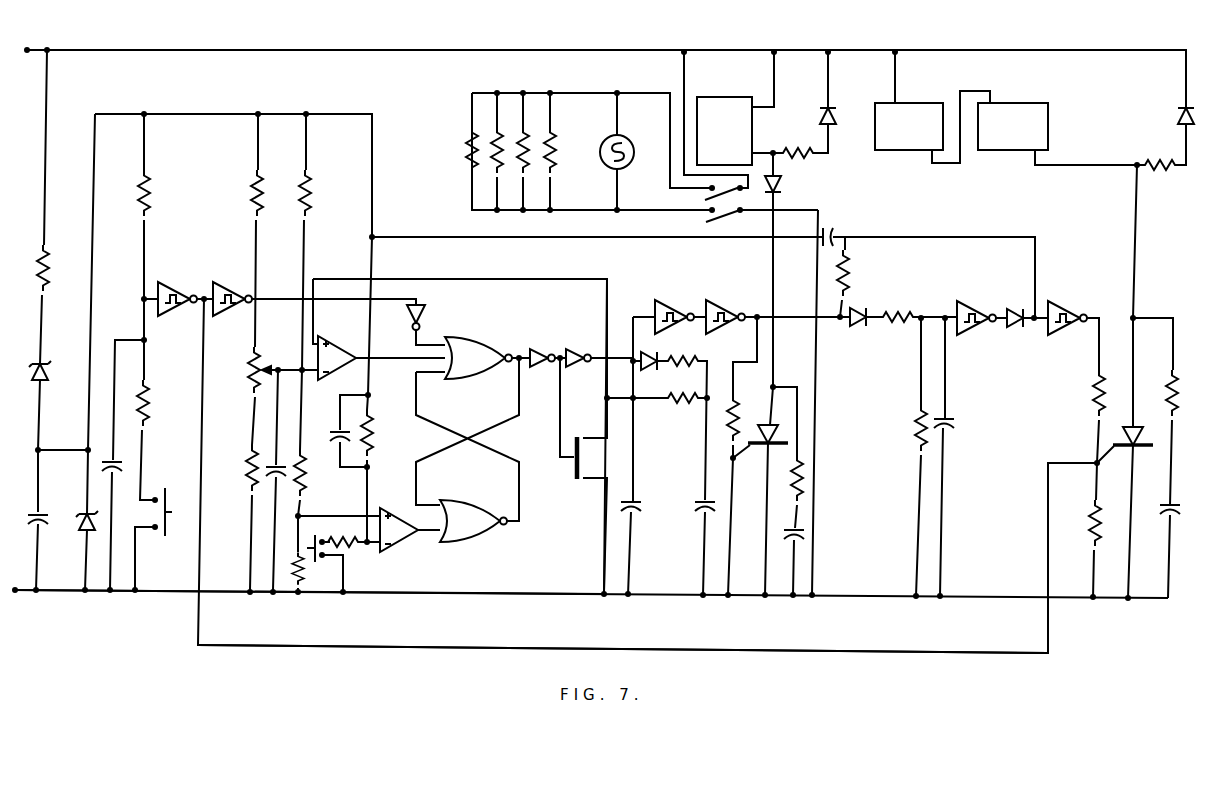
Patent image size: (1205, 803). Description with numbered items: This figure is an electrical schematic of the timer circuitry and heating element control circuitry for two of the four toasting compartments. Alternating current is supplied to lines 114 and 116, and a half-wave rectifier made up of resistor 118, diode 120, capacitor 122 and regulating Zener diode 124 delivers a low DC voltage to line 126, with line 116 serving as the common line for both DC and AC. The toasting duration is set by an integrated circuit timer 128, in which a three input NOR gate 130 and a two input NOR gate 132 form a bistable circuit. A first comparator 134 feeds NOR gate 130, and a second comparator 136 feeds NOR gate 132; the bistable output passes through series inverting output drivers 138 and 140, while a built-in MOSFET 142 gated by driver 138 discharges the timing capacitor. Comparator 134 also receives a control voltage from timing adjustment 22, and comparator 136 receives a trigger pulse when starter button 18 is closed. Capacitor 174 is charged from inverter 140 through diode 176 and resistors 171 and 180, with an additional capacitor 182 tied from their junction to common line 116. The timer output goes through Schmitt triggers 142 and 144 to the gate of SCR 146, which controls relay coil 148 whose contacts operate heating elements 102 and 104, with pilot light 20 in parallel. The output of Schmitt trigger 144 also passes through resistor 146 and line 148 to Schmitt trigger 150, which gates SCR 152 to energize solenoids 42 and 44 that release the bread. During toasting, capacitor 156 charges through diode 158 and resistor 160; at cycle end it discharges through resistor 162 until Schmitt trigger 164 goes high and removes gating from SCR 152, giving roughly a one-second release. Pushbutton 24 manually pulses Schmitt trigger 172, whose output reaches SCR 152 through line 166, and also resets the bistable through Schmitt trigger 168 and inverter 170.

The line 114 is at (236, 52).
The line 126 is at (117, 114).
The resistor 118 is at (45, 277).
The diode 120 is at (43, 364).
The capacitor 122 is at (42, 511).
The regulating Zener diode 124 is at (80, 512).
The line 116 is at (153, 596).
The Schmitt trigger 172 is at (168, 283).
The Schmitt trigger 168 is at (224, 283).
The timing adjustment 22 is at (253, 366).
The pushbutton 24 is at (172, 530).
The starter button 18 is at (316, 563).
The integrated circuit timer 128 is at (401, 595).
The first comparator 134 is at (337, 344).
The inverter 170 is at (425, 313).
The three input NOR gate 130 is at (478, 340).
The inverting output driver 138 is at (538, 350).
The inverting output driver 140 is at (580, 350).
The second comparator 136 is at (400, 548).
The two input NOR gate 132 is at (490, 540).
The MOSFET / Schmitt trigger 142 is at (573, 479).
The Schmitt trigger 144 is at (729, 300).
The diode 176 is at (641, 353).
The resistor 171 is at (678, 356).
The resistor 180 is at (678, 404).
The capacitor 174 is at (632, 502).
The additional capacitor 182 is at (700, 504).
The SCR / resistor 146 is at (766, 448).
The diode 158 is at (861, 329).
The resistor 160 is at (897, 329).
The resistor 162 is at (918, 430).
The capacitor 156 is at (948, 432).
The Schmitt trigger 164 is at (975, 303).
The Schmitt trigger 150 is at (1064, 303).
The SCR 152 is at (1137, 427).
The relay coil / line 148 is at (752, 127).
The solenoid 42 is at (917, 152).
The solenoid 44 is at (1020, 103).
The line 166 is at (948, 655).
The heating element 102 is at (468, 150).
The heating element 104 is at (497, 135).
The pilot light 20 is at (606, 159).